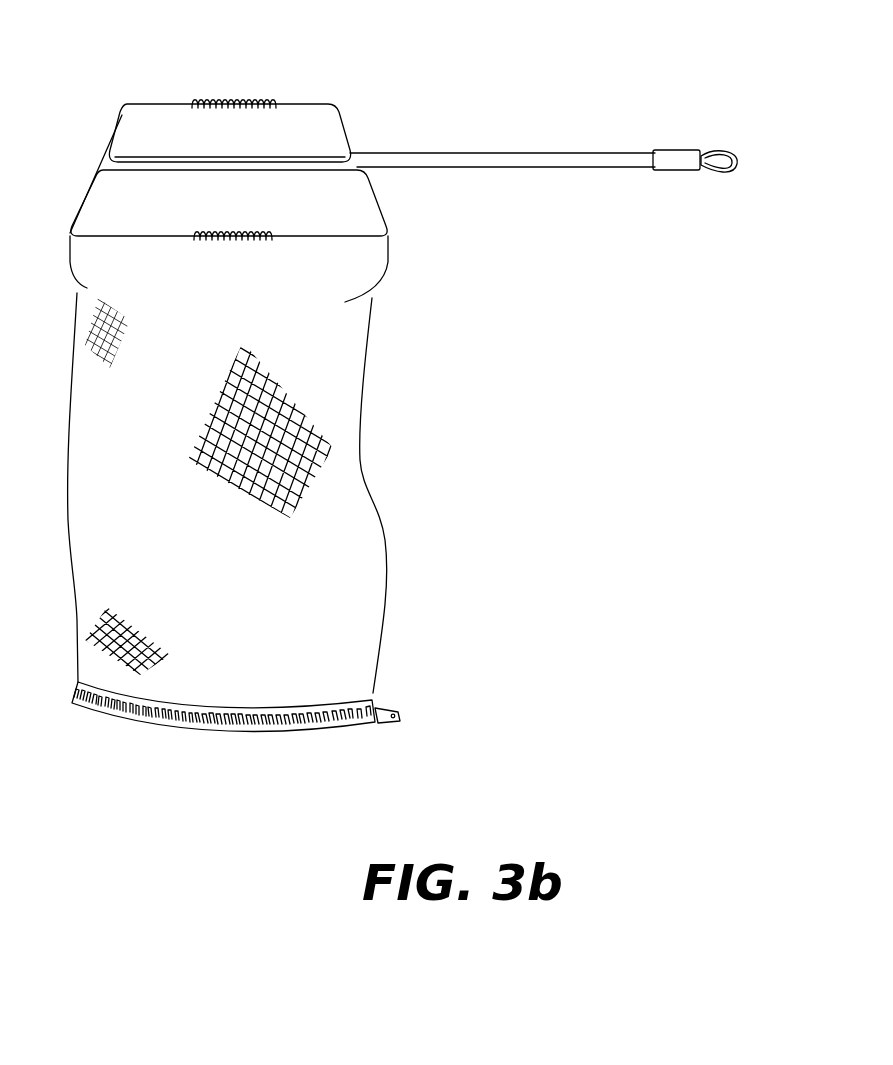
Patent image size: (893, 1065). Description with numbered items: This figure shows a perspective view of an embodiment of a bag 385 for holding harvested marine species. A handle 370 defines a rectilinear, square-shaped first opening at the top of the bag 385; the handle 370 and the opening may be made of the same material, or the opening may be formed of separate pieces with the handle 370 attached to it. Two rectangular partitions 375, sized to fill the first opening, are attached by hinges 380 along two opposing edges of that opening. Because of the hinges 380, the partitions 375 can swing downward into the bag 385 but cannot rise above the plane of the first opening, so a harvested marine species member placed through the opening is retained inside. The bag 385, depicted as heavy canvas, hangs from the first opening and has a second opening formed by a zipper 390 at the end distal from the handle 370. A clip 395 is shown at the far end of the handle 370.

The handle 370 is at (503, 152).
The partitions 375 is at (90, 193).
The hinges 380 is at (243, 100).
The bag 385 is at (318, 614).
The zipper 390 is at (288, 720).
The clip 395 is at (735, 150).